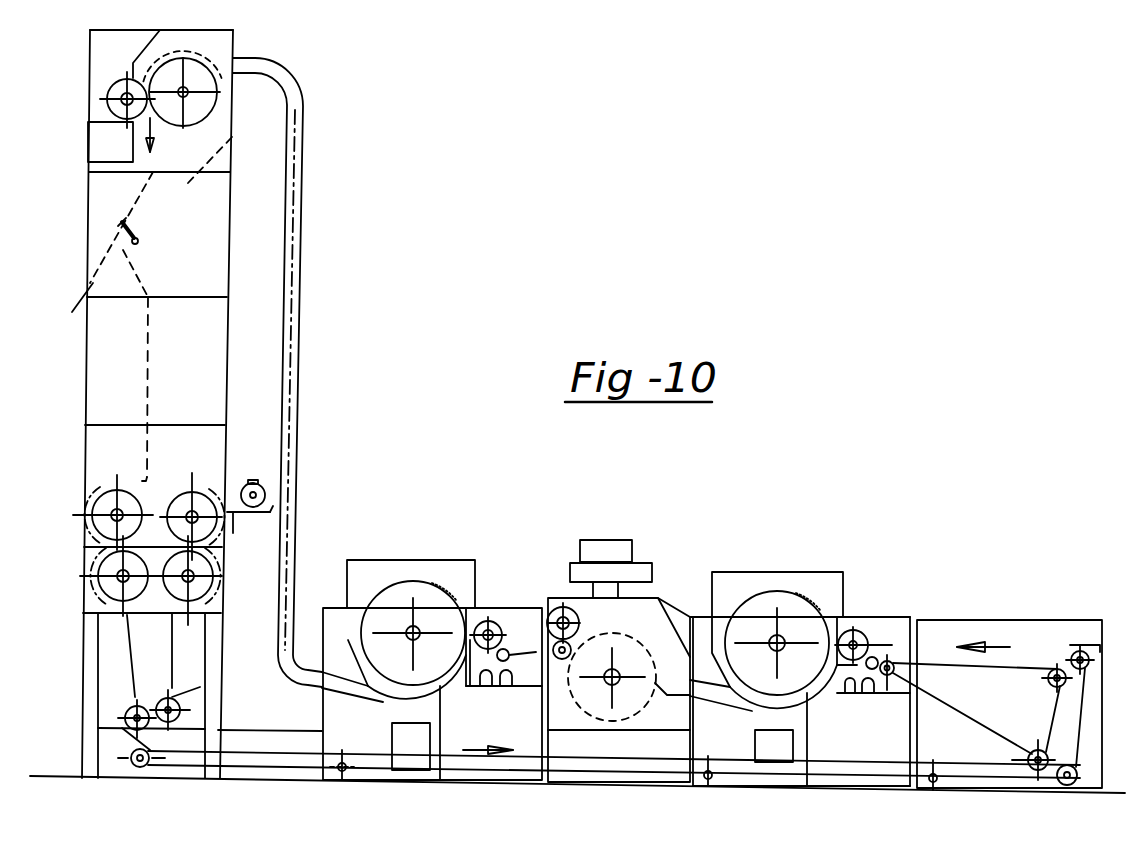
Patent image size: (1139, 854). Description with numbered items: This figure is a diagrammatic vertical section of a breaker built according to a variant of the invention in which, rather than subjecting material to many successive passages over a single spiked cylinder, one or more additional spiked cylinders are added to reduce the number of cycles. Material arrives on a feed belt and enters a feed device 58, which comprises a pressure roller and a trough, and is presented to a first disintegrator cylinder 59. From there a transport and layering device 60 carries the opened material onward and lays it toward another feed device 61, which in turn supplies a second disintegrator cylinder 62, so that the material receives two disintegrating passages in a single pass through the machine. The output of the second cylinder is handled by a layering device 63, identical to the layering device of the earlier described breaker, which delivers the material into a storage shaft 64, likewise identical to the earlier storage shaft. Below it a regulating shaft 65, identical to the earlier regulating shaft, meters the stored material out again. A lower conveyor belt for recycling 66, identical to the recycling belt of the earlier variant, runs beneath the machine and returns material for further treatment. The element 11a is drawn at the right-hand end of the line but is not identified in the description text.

The layering device 63 is at (202, 63).
The storage shaft 64 is at (194, 228).
The regulating shaft 65 is at (142, 657).
The second disintegrator cylinder 62 is at (432, 657).
The feed device 61 is at (495, 622).
The transport and layering device 60 is at (595, 550).
The lower conveyor belt for recycling 66 is at (568, 757).
The first disintegrator cylinder 59 is at (800, 664).
The feed device 58 is at (856, 630).
The conveyor 11a is at (1015, 665).